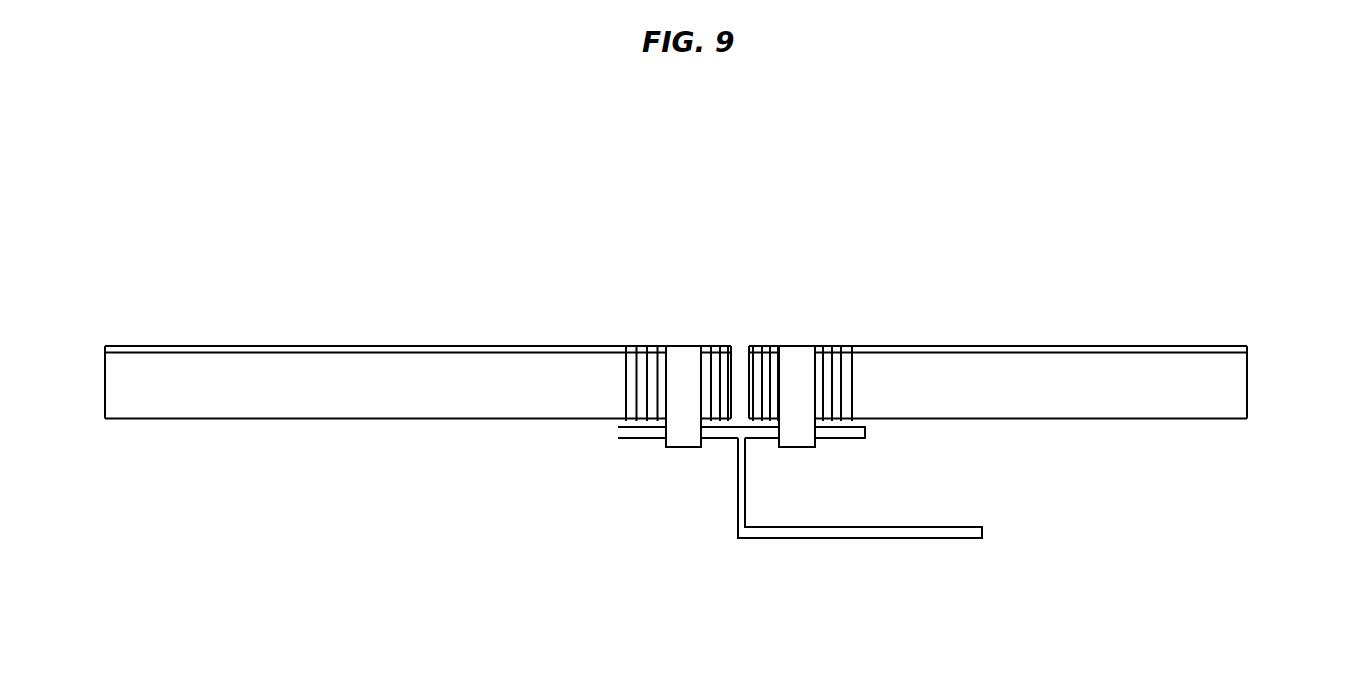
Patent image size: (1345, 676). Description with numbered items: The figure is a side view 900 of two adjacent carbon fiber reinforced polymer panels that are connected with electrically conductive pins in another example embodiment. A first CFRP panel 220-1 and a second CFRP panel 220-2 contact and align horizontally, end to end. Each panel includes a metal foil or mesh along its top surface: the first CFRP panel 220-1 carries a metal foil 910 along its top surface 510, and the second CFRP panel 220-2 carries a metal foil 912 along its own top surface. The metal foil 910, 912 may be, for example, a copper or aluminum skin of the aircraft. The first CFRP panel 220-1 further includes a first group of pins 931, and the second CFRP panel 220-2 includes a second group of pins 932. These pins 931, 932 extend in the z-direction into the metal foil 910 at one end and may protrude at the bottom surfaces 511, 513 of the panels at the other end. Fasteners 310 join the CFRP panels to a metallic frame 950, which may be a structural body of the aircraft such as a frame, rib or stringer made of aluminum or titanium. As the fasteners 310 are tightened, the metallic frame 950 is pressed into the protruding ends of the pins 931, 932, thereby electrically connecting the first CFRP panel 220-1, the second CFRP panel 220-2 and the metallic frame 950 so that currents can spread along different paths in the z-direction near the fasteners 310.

The side view 900 is at (335, 127).
The first CFRP panel 220-1 is at (105, 388).
The second CFRP panel 220-2 is at (1247, 382).
The top surface 510 is at (314, 338).
The bottom surface 511 is at (344, 426).
The metal foil 910 is at (413, 345).
The metal foil 912 is at (1090, 352).
The bottom surface 513 is at (1128, 430).
The fastener 310 is at (682, 360).
The first group of pins 931 is at (606, 424).
The second group of pins 932 is at (843, 321).
The metallic frame 950 is at (920, 538).